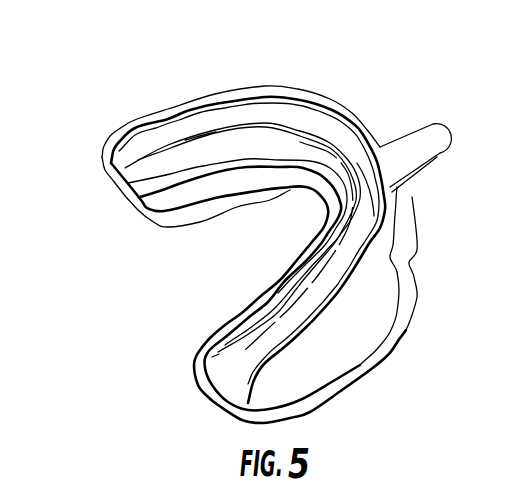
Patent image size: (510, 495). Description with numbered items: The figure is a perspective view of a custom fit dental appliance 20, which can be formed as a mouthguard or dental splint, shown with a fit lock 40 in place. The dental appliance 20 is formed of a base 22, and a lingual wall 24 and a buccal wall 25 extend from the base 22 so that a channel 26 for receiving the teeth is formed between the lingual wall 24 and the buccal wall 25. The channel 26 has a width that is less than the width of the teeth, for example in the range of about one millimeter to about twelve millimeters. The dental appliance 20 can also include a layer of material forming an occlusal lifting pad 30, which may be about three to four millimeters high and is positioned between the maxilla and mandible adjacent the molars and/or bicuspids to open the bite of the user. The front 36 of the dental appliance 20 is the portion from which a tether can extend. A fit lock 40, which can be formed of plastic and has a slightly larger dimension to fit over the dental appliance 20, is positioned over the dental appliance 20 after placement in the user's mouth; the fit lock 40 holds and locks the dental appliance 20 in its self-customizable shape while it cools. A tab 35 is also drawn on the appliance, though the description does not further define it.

The dental appliance 20 is at (266, 66).
The base 22 is at (111, 164).
The lingual wall 24 is at (153, 200).
The buccal wall 25 is at (374, 316).
The channel 26 is at (149, 165).
The occlusal lifting pad 30 is at (326, 378).
The tab 35 is at (415, 127).
The front 36 is at (352, 122).
The fit lock 40 is at (317, 92).